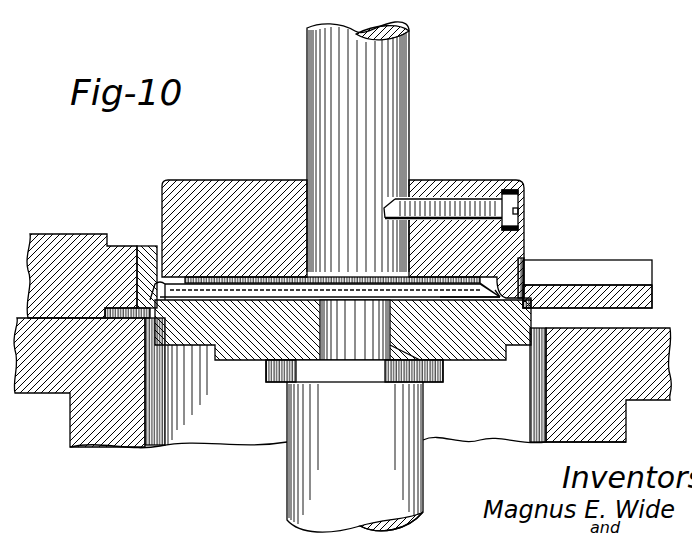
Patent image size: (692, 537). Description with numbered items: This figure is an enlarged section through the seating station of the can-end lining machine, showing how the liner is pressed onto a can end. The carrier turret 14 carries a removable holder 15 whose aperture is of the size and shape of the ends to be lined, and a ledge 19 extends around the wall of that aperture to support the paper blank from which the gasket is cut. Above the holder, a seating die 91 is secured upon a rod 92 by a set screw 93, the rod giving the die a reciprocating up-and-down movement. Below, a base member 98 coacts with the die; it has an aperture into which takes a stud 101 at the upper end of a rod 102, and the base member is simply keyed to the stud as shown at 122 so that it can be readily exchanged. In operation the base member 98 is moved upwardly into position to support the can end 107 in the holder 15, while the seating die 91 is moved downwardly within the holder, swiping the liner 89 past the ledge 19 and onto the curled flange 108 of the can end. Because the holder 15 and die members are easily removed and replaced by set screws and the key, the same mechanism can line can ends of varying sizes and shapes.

The carrier turret 14 is at (67, 242).
The holder 15 is at (147, 247).
The ledge 19 is at (525, 272).
The liner 89 is at (527, 260).
The seating die 91 is at (470, 180).
The rod 92 is at (393, 106).
The set screw 93 is at (512, 201).
The base member 98 is at (506, 347).
The stud 101 is at (352, 356).
The rod 102 is at (305, 474).
The can end 107 is at (486, 296).
The curled flange 108 is at (530, 303).
The key 122 is at (398, 353).